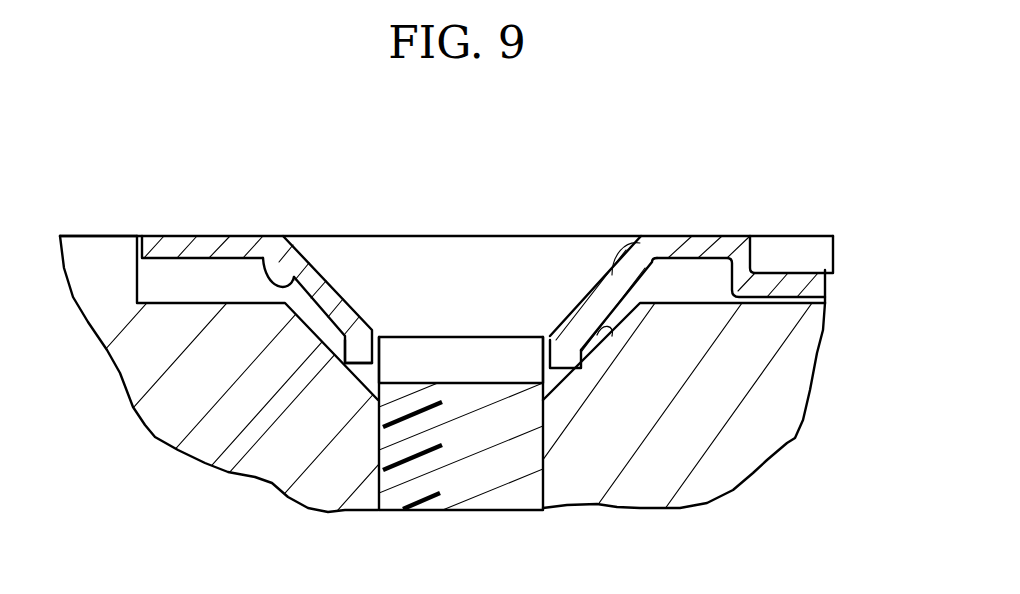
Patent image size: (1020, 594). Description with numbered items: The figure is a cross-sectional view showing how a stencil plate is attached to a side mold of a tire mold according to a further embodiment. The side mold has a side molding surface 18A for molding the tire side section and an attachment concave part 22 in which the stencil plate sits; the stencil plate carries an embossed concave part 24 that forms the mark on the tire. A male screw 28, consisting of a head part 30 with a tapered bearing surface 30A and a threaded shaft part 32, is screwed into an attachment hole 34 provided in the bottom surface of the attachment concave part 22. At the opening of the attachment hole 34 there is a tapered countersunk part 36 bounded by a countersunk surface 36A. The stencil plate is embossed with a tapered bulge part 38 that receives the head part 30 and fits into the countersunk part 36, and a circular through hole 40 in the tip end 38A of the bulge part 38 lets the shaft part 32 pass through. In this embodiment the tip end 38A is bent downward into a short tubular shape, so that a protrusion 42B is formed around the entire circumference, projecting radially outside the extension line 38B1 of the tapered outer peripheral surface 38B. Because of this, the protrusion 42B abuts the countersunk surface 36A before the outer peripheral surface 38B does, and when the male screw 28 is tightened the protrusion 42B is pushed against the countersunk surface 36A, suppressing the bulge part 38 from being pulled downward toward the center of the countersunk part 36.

The side molding surface 18A is at (96, 233).
The attachment concave part 22 is at (188, 303).
The concave part 24 is at (783, 273).
The male screw 28 is at (532, 226).
The head part 30 is at (453, 273).
The bearing surface 30A is at (565, 320).
The shaft part 32 is at (453, 487).
The attachment hole 34 is at (531, 387).
The countersunk part 36 is at (208, 463).
The countersunk surface 36A is at (638, 335).
The bulge part 38 is at (320, 272).
The tip end 38A is at (357, 357).
The tapered outer peripheral surface 38B is at (265, 255).
The extension line 38B1 is at (528, 395).
The through hole 40 is at (530, 335).
The protrusion 42B is at (597, 335).